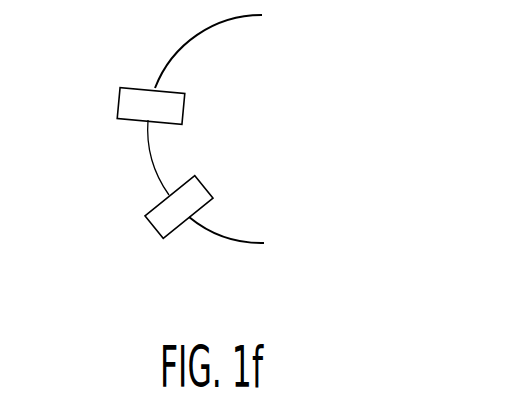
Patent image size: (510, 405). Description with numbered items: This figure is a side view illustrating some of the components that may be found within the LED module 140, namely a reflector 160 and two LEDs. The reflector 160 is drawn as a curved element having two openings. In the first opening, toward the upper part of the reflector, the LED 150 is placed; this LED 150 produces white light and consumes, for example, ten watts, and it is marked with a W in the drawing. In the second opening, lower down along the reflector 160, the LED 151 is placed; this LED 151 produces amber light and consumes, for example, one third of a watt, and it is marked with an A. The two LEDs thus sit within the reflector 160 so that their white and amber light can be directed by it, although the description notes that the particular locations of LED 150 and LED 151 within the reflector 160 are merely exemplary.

The LED module 140 is at (338, 39).
The LED 150 is at (142, 87).
The LED 151 is at (180, 235).
The reflector 160 is at (151, 162).